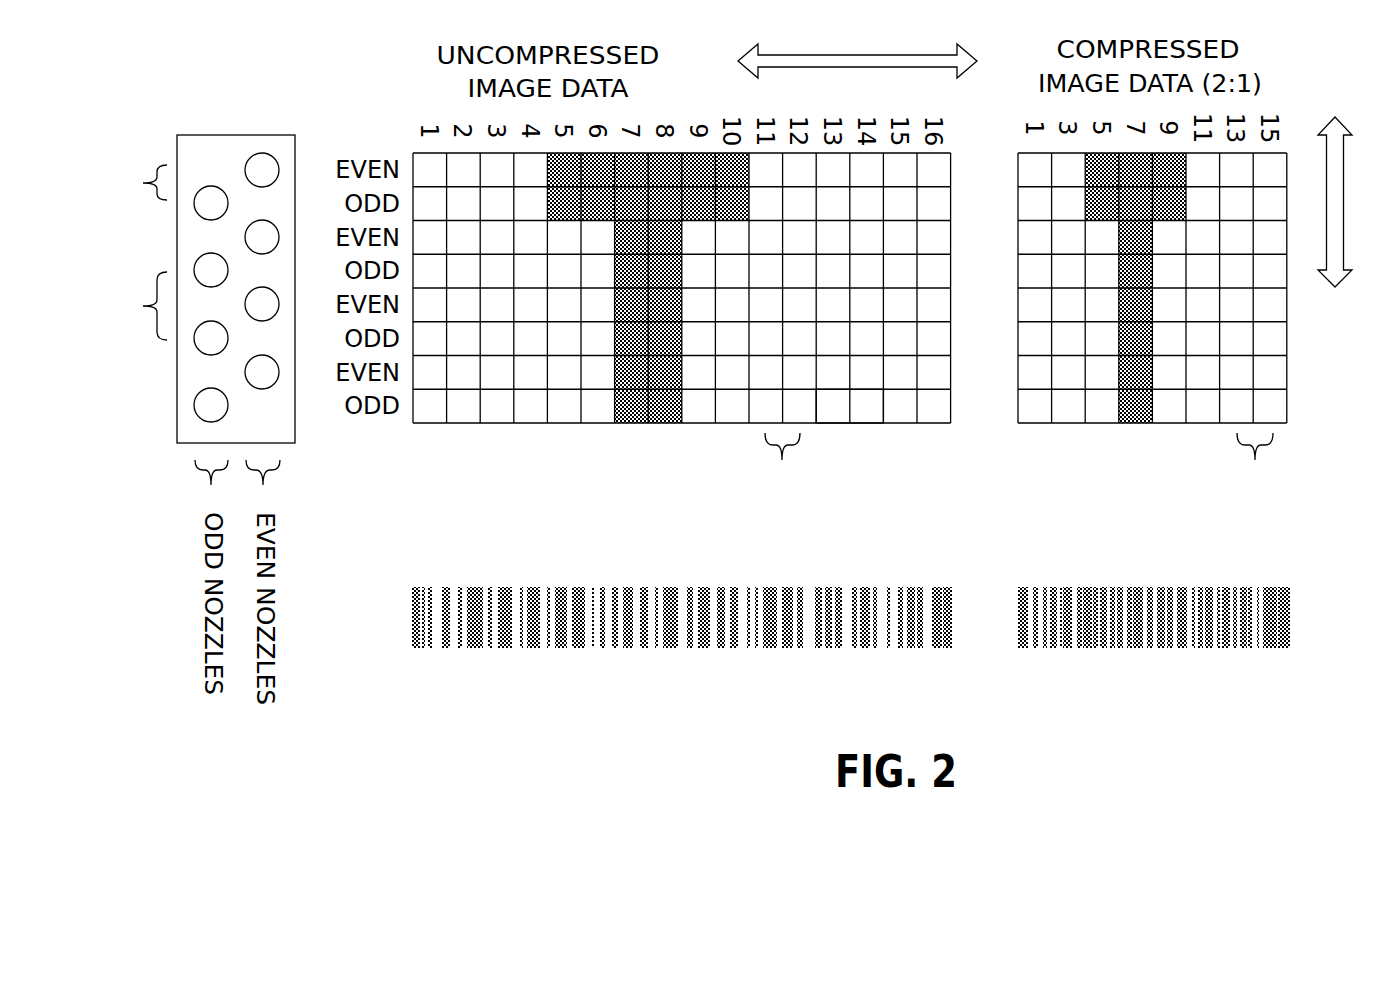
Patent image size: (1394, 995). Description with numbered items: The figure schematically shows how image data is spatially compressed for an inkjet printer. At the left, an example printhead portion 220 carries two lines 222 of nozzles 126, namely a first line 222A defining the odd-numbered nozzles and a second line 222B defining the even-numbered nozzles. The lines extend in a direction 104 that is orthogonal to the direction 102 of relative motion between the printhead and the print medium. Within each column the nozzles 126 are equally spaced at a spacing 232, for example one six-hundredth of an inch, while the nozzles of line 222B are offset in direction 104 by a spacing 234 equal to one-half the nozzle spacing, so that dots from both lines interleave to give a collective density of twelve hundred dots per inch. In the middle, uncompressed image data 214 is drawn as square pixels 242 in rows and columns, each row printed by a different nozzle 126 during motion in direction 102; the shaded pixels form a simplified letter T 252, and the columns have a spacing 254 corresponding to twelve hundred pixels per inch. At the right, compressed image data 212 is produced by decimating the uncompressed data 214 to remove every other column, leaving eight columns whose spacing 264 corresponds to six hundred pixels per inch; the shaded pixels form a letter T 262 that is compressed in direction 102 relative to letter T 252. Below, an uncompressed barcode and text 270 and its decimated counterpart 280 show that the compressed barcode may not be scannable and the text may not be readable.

The direction of relative motion 102 is at (873, 55).
The direction orthogonal to the direction of relative motion 104 is at (1331, 288).
The nozzles 126 is at (201, 352).
The spatially-compressed image data 212 is at (1121, 331).
The uncompressed image data 214 is at (686, 329).
The printhead portion 220 is at (295, 414).
The lines of nozzles 222 is at (223, 263).
The first line of nozzles 222A is at (164, 294).
The second line of nozzles 222B is at (295, 238).
The nozzle spacing 232 is at (138, 306).
The offset spacing 234 is at (138, 183).
The pixels 242 is at (833, 404).
The letter "T" 252 is at (649, 447).
The column spacing of uncompressed image data 254 is at (783, 465).
The compressed letter "T" 262 is at (1137, 445).
The column spacing of compressed image data 264 is at (1256, 464).
The uncompressed barcode and uncompressed text 270 is at (666, 713).
The compressed barcode and compressed text 280 is at (1160, 715).